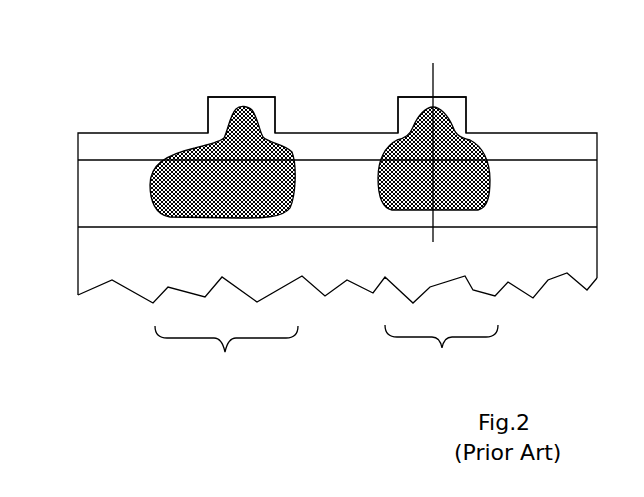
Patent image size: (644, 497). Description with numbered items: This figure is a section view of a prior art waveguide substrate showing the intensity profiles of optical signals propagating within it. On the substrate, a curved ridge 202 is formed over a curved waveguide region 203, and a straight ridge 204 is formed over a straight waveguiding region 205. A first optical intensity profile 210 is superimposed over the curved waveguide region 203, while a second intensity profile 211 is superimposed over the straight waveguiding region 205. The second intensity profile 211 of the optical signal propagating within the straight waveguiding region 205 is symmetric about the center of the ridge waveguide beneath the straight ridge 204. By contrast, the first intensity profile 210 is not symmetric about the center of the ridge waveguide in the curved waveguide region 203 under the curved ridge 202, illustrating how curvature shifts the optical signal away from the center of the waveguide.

The curved ridge 202 is at (205, 92).
The curved waveguide region 203 is at (337, 245).
The straight ridge 204 is at (472, 92).
The straight waveguiding region 205 is at (441, 359).
The first optical intensity profile 210 is at (290, 147).
The second intensity profile 211 is at (478, 148).